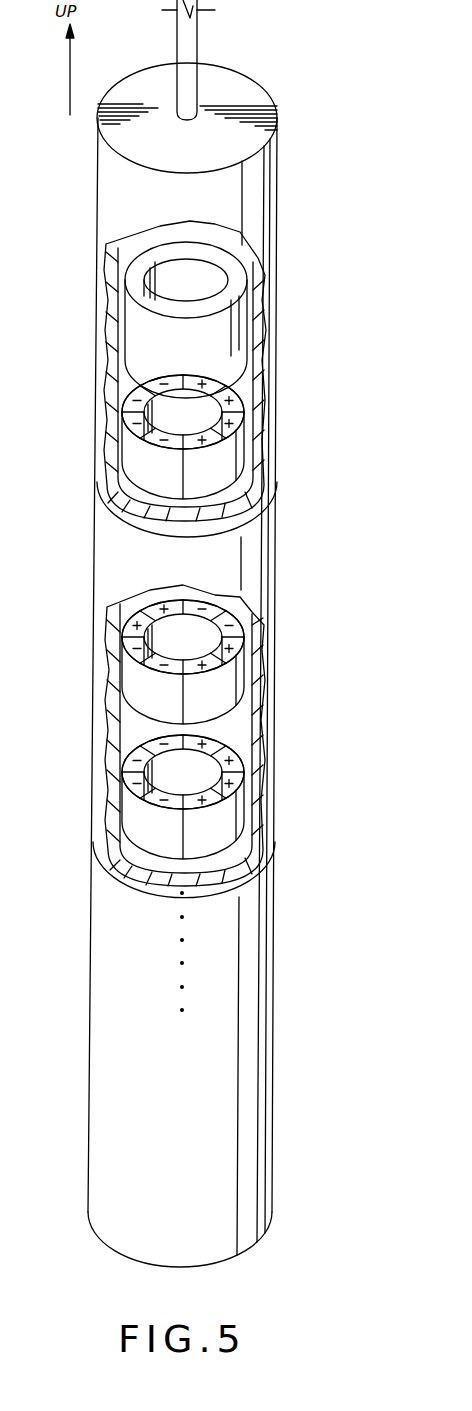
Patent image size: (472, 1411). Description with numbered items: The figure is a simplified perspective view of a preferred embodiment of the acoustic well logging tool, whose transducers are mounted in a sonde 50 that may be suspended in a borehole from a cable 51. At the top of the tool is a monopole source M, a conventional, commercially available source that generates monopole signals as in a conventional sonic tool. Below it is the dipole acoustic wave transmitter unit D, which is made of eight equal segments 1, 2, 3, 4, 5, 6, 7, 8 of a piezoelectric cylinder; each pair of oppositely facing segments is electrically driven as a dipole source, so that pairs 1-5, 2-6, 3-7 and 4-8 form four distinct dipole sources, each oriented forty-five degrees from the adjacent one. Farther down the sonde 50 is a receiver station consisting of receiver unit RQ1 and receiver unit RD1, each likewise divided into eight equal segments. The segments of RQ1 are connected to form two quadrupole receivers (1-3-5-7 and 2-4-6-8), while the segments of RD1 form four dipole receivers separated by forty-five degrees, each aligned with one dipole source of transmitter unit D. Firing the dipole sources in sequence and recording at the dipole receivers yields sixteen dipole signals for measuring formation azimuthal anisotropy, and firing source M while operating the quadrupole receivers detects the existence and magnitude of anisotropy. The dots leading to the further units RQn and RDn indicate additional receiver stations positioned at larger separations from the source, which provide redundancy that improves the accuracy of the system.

The piezoelectric cylinder segment 1 is at (212, 475).
The piezoelectric cylinder segment 2 is at (233, 447).
The piezoelectric cylinder segment 3 is at (235, 410).
The piezoelectric cylinder segment 4 is at (212, 385).
The piezoelectric cylinder segment 5 is at (153, 385).
The piezoelectric cylinder segment 6 is at (130, 408).
The piezoelectric cylinder segment 7 is at (130, 457).
The piezoelectric cylinder segment 8 is at (155, 475).
The sonde 50 is at (280, 548).
The cable 51 is at (190, 43).
The dipole acoustic wave transmitter unit D is at (246, 430).
The monopole source M is at (197, 354).
The quadrupole receiver unit RQ1 is at (246, 661).
The dipole receiver unit RD1 is at (246, 800).
The nth quadrupole ring RQn is at (185, 1046).
The nth dipole ring RDn is at (185, 1094).